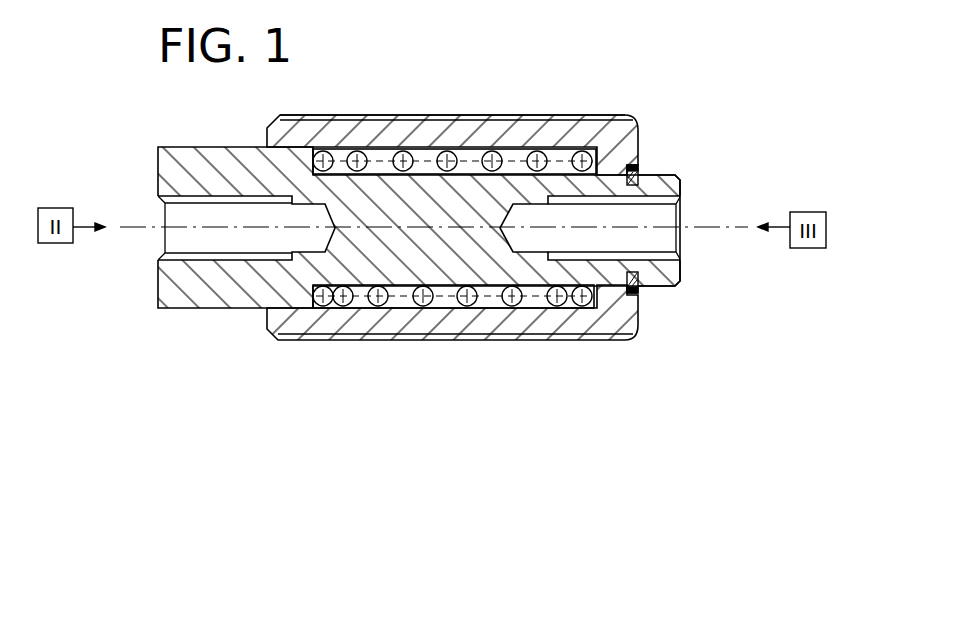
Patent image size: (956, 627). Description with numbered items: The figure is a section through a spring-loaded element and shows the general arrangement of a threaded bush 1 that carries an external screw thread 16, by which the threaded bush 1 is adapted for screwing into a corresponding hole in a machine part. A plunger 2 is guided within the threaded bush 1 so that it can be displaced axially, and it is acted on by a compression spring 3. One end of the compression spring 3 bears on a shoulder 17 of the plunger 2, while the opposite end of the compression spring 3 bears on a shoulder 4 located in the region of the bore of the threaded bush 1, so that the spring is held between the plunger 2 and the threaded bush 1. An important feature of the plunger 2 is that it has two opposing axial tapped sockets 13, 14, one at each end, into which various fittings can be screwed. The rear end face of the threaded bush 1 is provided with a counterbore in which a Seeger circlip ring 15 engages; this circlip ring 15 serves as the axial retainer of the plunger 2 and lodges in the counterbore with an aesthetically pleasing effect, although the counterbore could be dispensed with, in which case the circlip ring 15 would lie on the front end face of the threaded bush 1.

The threaded bush 1 is at (457, 133).
The plunger 2 is at (423, 250).
The compression spring 3 is at (577, 114).
The shoulder 4 is at (597, 163).
The axial tapped socket 13 is at (245, 242).
The axial tapped socket 14 is at (650, 263).
The Seeger circlip ring 15 is at (635, 166).
The external screw thread 16 is at (373, 115).
The shoulder 17 is at (318, 312).